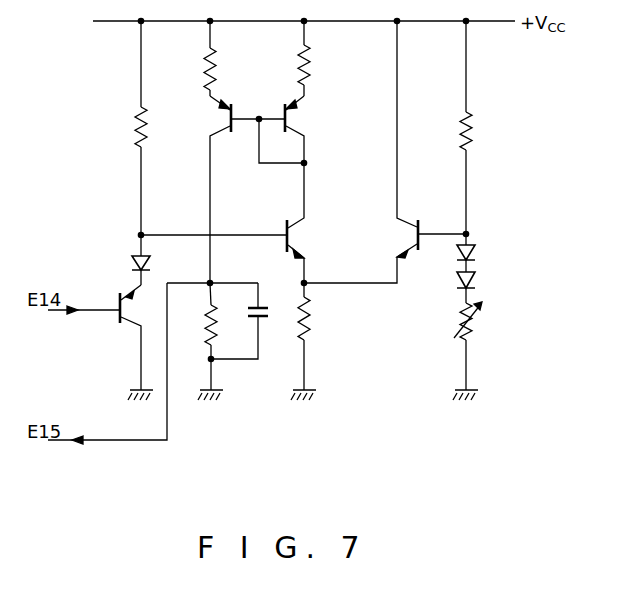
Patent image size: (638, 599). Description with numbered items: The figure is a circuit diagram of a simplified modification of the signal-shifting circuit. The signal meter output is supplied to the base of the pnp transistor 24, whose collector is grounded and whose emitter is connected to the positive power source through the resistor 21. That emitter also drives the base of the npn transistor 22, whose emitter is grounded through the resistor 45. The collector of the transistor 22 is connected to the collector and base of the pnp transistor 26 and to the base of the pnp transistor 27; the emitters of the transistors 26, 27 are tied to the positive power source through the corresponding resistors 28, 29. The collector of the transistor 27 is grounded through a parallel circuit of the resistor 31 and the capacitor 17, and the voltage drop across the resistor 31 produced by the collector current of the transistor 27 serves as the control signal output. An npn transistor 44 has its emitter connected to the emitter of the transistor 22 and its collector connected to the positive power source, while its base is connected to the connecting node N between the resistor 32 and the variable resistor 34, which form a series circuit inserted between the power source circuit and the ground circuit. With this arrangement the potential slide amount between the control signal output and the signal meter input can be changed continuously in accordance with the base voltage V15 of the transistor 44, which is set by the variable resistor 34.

The resistor 21 is at (134, 131).
The pnp transistor 24 is at (124, 288).
The resistor 29 is at (218, 58).
The pnp transistor 27 is at (209, 120).
The resistor 28 is at (312, 55).
The pnp transistor 26 is at (300, 116).
The npn transistor 22 is at (302, 238).
The resistor 45 is at (312, 325).
The resistor 31 is at (205, 326).
The capacitor 17 is at (270, 313).
The npn transistor 44 is at (408, 235).
The resistor 32 is at (474, 137).
The variable resistor 34 is at (476, 325).
The connecting node N is at (462, 232).
The base voltage V15 is at (472, 236).